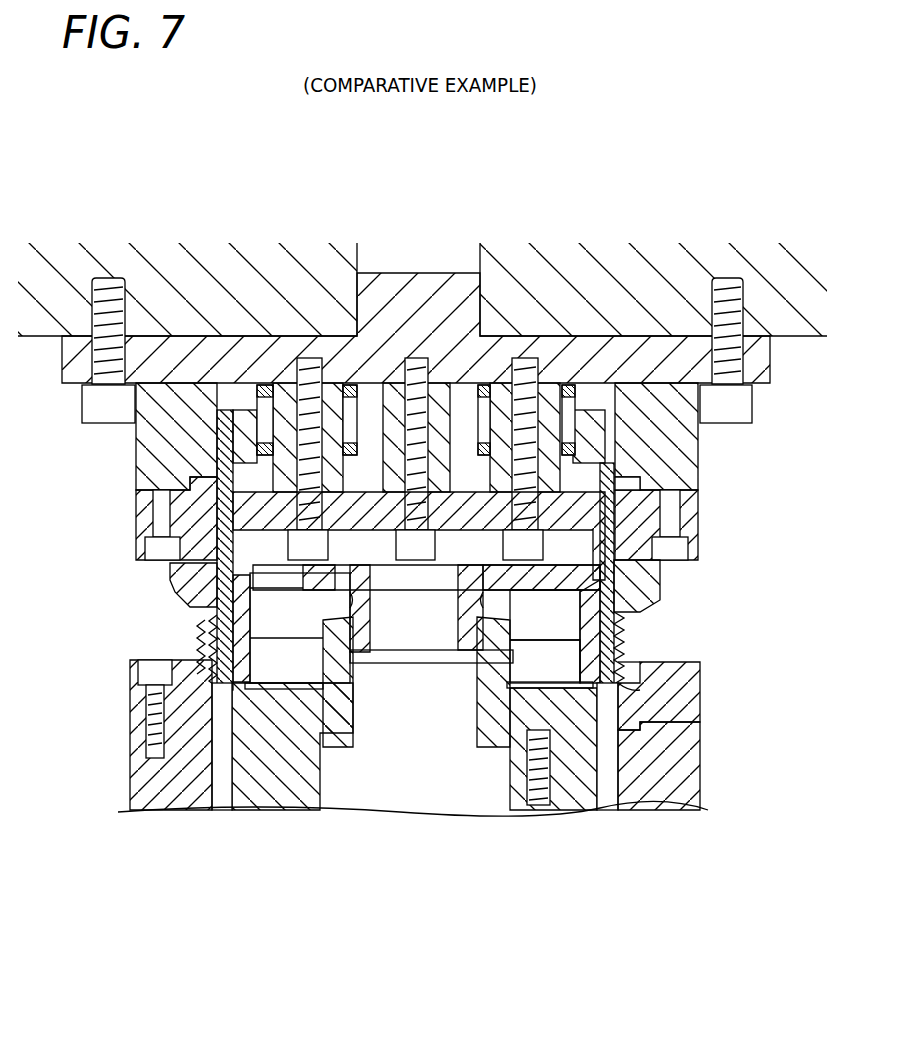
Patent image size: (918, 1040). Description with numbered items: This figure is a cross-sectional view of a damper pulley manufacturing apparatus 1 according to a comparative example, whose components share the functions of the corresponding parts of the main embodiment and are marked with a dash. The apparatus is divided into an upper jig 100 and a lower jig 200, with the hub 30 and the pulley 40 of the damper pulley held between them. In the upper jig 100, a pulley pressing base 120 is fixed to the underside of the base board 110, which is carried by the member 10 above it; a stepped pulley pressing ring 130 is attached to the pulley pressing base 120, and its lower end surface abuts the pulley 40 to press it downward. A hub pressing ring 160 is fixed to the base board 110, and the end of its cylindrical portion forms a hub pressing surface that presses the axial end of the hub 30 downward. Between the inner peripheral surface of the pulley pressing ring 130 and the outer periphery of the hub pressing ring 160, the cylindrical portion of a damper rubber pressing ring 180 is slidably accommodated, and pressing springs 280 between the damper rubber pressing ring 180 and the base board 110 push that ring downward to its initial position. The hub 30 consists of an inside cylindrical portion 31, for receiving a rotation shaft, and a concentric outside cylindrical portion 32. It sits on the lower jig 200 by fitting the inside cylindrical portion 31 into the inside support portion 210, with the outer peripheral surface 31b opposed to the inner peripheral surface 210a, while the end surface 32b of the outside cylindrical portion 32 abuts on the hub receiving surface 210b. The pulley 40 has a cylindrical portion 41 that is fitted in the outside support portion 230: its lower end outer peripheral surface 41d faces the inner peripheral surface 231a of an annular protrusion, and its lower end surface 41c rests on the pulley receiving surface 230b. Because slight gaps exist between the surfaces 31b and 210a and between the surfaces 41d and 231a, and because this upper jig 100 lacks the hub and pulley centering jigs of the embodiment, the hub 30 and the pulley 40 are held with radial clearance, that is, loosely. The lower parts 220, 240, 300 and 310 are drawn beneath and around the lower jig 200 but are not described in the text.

The damper pulley manufacturing apparatus 1 is at (185, 150).
The upper holder / slide 10 is at (563, 272).
The base board 110 is at (592, 365).
The pulley pressing base 120 is at (160, 452).
The pulley pressing ring 130 is at (195, 523).
The hub pressing ring 160 is at (645, 487).
The damper rubber pressing ring 180 is at (233, 410).
The pressing springs 280 is at (265, 398).
The upper jig 100 is at (727, 516).
The hub 30 is at (495, 572).
The inside cylindrical portion 31 is at (458, 612).
The outer peripheral surface of the inside cylindrical portion 31b is at (480, 600).
The outside cylindrical portion 32 is at (582, 594).
The end surface of the outside cylindrical portion 32b is at (557, 690).
The pulley 40 is at (645, 590).
The cylindrical portion 41 is at (640, 645).
The lower end surface 41c is at (640, 690).
The lower end outer peripheral surface 41d is at (148, 680).
The lower jig 200 is at (727, 778).
The inside support portion 210 is at (497, 735).
The inner peripheral surface of the inside support portion 210a is at (478, 655).
The hub receiving surface 210b is at (583, 686).
The guide pin 220 is at (580, 790).
The outside support portion 230 is at (690, 680).
The pulley receiving surface 230b is at (640, 662).
The inner peripheral surface of the annular protrusion 231a is at (192, 680).
The lower base plate 240 is at (680, 787).
The bolster 300 is at (672, 862).
The bolster bolt 310 is at (608, 790).